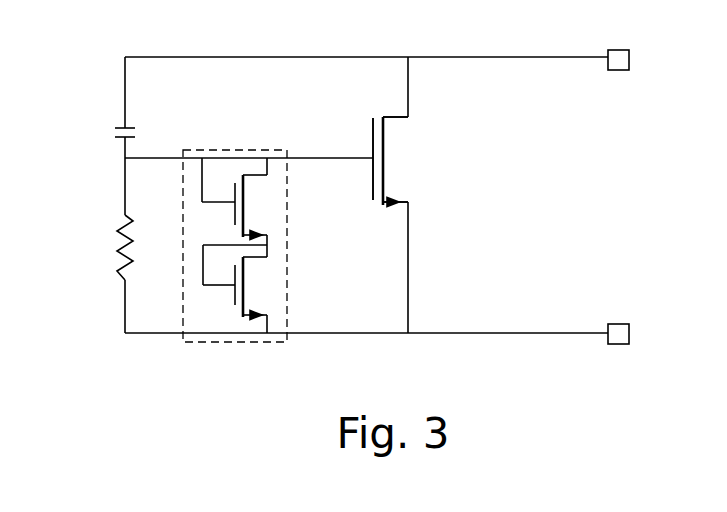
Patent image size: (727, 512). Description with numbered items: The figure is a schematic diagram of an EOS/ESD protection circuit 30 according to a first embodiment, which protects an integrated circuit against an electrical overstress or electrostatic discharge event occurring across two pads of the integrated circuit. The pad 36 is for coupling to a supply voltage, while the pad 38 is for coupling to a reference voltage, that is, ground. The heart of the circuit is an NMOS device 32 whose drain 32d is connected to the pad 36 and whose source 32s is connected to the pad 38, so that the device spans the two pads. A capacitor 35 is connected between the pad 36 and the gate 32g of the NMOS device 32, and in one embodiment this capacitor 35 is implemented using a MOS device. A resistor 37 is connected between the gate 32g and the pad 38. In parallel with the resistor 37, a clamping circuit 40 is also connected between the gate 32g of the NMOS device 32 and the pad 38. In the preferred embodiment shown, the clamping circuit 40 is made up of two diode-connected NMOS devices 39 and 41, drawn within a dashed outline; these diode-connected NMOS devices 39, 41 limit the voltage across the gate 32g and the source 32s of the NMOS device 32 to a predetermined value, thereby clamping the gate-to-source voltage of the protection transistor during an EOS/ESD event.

The EOS/ESD protection circuit 30 is at (620, 188).
The NMOS device 32 is at (391, 172).
The drain 32d is at (394, 117).
The gate 32g is at (373, 141).
The source 32s is at (401, 206).
The capacitor 35 is at (113, 133).
The pad 36 is at (608, 50).
The resistor 37 is at (120, 232).
The pad 38 is at (630, 325).
The diode-connected NMOS device 39 is at (255, 203).
The clamping circuit 40 is at (281, 343).
The diode-connected NMOS device 41 is at (255, 285).